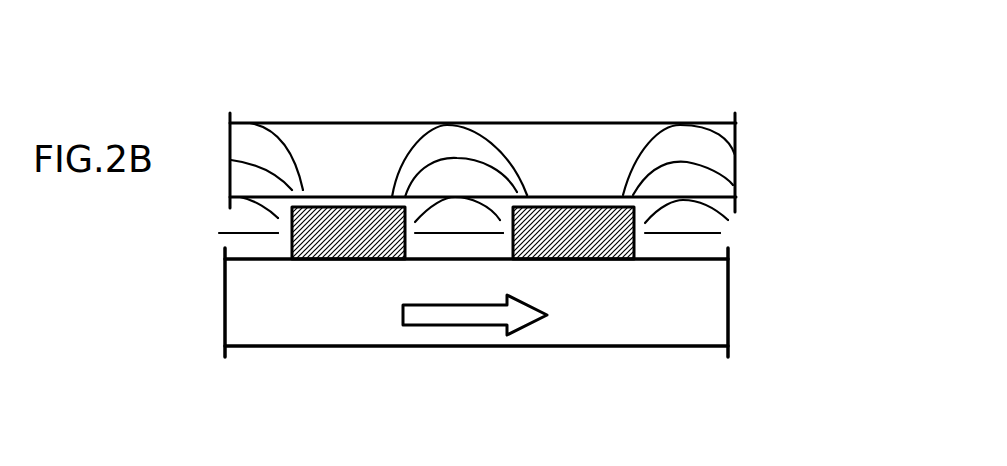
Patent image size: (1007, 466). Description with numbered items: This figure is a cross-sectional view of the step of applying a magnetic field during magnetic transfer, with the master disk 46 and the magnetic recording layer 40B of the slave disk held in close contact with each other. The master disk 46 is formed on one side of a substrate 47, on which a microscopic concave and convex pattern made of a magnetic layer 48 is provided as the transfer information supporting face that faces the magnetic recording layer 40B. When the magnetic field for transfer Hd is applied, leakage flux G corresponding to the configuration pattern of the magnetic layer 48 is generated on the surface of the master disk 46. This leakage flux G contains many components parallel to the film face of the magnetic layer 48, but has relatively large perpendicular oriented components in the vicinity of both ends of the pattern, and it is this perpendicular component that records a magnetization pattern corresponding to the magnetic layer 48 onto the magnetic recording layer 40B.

The magnetic recording layer 40B is at (722, 123).
The master disk 46 is at (752, 293).
The substrate 47 is at (653, 347).
The magnetic layer 48 is at (328, 259).
The magnetic field for transfer Hd is at (455, 325).
The leakage flux G is at (412, 148).